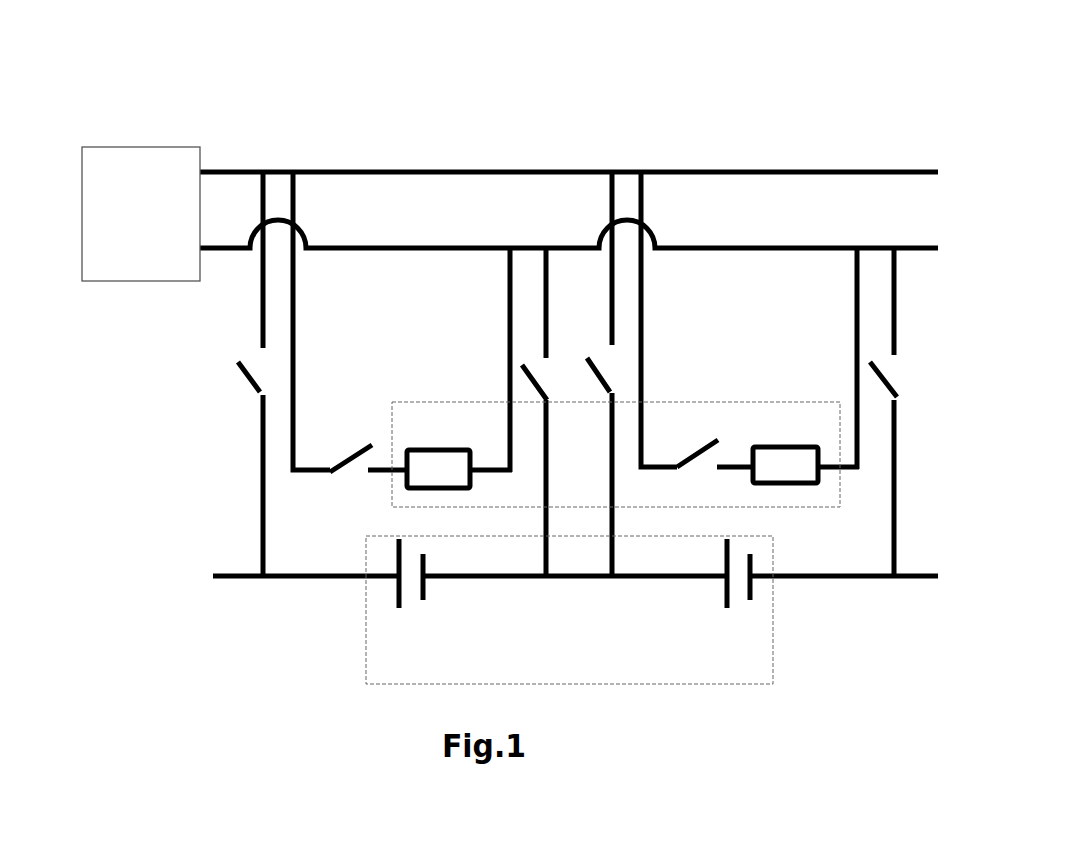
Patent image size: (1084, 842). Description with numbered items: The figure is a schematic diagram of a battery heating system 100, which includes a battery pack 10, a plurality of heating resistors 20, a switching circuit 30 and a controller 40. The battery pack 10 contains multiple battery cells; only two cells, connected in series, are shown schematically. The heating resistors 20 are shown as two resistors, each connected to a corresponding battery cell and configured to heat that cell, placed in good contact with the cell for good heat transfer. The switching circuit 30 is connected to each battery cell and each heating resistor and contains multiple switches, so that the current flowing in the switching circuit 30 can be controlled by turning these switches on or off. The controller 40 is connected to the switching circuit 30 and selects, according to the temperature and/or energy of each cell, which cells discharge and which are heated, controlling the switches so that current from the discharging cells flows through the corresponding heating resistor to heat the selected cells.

The battery heating system 100 is at (471, 111).
The controller 40 is at (141, 214).
The switching circuit 30 is at (256, 478).
The heating resistors 20 is at (616, 454).
The battery pack 10 is at (569, 610).